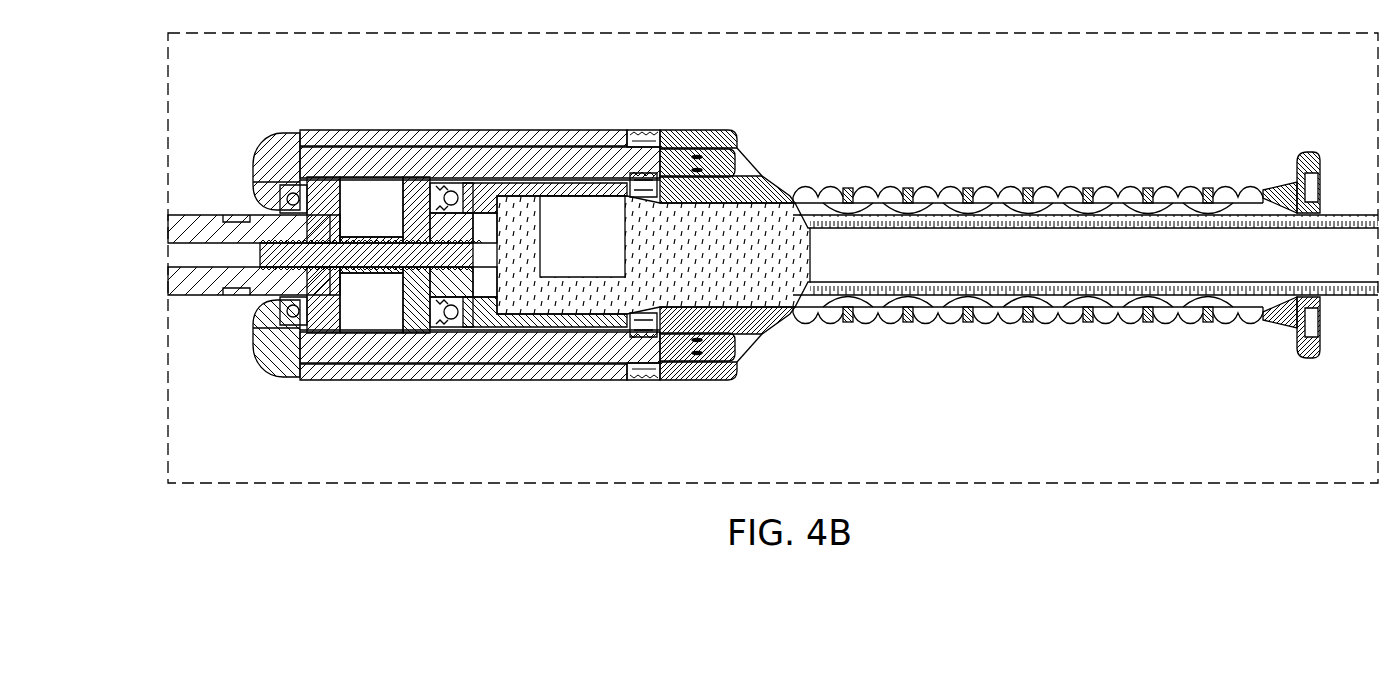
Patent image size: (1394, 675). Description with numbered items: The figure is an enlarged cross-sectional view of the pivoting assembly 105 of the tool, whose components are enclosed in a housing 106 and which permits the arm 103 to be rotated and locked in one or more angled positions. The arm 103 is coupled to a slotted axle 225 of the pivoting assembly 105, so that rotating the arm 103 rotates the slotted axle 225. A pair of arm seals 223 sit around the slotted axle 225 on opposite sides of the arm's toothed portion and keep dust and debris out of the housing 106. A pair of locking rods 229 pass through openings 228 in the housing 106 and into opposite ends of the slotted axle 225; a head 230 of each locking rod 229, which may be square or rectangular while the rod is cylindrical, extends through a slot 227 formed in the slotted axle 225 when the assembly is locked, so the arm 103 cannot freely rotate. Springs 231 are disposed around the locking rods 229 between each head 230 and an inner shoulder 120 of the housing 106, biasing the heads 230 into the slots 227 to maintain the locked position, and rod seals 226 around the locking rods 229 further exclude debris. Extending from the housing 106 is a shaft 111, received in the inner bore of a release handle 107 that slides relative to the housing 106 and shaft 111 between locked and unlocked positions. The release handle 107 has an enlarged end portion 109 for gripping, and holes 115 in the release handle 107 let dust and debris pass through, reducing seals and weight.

The arm 103 is at (202, 212).
The pivoting assembly 105 is at (910, 125).
The housing 106 is at (497, 140).
The release handle 107 is at (1030, 190).
The enlarged end portion 109 is at (1287, 183).
The shaft 111 is at (990, 307).
The holes 115 is at (1140, 207).
The inner shoulder 120 is at (625, 140).
The arm seals 223 is at (278, 160).
The slotted axle 225 is at (333, 197).
The rod seals 226 is at (647, 132).
The slot 227 is at (328, 357).
The openings 228 is at (735, 148).
The locking rods 229 is at (735, 163).
The head 230 is at (433, 148).
The springs 231 is at (542, 145).